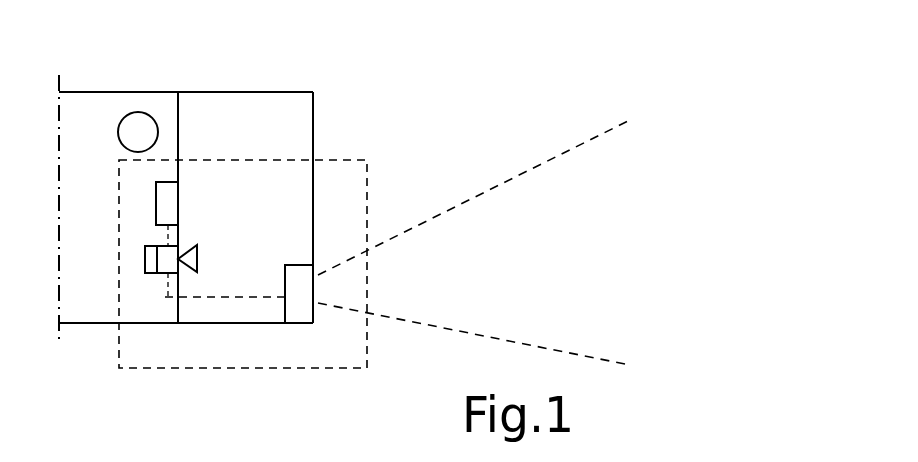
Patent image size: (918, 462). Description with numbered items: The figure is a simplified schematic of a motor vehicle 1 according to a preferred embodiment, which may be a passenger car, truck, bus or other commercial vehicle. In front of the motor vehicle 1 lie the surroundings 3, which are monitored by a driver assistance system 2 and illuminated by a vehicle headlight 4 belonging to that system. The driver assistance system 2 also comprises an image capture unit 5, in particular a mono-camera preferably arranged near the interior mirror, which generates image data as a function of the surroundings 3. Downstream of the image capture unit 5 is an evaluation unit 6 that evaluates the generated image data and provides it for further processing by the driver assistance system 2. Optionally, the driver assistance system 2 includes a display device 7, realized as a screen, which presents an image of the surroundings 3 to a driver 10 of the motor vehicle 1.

The motor vehicle 1 is at (320, 66).
The driver assistance system 2 is at (193, 359).
The surroundings 3 is at (457, 150).
The vehicle headlight 4 is at (297, 312).
The image capture unit 5 is at (186, 250).
The evaluation unit 6 is at (145, 258).
The display device 7 is at (166, 206).
The driver 10 is at (138, 131).